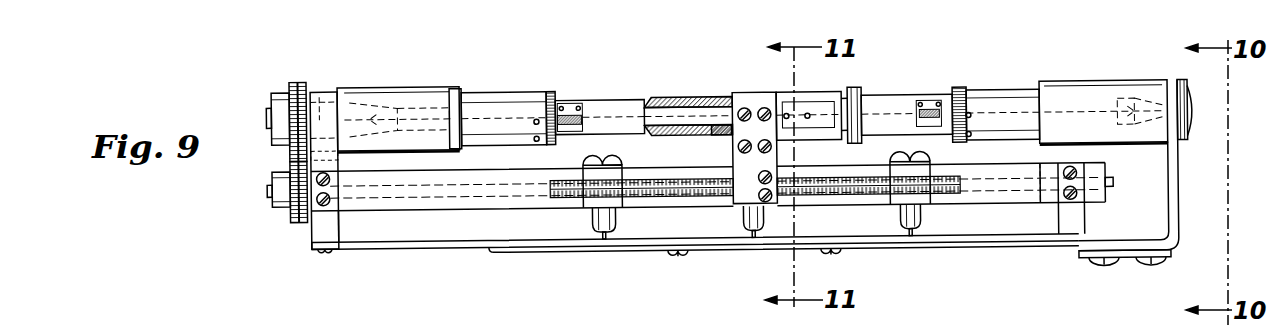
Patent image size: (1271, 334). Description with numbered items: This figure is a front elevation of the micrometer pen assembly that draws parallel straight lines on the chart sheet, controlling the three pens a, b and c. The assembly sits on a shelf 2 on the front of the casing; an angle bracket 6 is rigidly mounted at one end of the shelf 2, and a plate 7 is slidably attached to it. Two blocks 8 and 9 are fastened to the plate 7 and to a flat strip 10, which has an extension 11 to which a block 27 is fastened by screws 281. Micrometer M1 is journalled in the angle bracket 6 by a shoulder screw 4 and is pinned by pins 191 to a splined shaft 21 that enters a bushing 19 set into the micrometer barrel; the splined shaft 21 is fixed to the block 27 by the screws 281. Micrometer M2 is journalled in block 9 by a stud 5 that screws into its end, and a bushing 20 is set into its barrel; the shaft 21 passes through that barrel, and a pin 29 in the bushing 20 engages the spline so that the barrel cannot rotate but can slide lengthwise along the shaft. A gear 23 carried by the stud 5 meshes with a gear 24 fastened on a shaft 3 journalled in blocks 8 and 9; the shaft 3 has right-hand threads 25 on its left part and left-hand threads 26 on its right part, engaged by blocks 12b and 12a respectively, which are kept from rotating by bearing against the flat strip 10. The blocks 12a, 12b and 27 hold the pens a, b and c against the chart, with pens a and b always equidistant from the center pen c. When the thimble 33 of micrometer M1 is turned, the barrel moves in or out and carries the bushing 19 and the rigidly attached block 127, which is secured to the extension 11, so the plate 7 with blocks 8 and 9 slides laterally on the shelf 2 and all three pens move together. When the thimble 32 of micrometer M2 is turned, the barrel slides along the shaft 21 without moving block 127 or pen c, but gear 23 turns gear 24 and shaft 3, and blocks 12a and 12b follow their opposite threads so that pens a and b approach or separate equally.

The shelf 2 is at (1017, 250).
The shaft 3 is at (380, 188).
The shoulder screw 4 is at (1190, 119).
The stud 5 is at (321, 93).
The angle bracket 6 is at (1175, 229).
The plate 7 is at (388, 242).
The block 8 is at (1076, 228).
The block 9 is at (317, 151).
The flat strip 10 is at (463, 204).
The extension 11 is at (763, 95).
The block 12a is at (933, 172).
The block 12b is at (583, 176).
The bushing 19 is at (828, 94).
The bushing 20 is at (717, 99).
The splined shaft 21 is at (677, 110).
The gear 23 is at (297, 78).
The gear 24 is at (298, 218).
The right-hand threads 25 is at (682, 191).
The left-hand threads 26 is at (853, 192).
The block 27 is at (772, 202).
The pin 29 is at (726, 134).
The thimble 32 is at (433, 89).
The thimble 33 is at (1067, 91).
The block 127 is at (740, 152).
The pins 191 is at (809, 114).
The screws 281 is at (771, 146).
The micrometer M1 is at (1078, 96).
The micrometer M2 is at (385, 92).
The pen a is at (909, 240).
The pen b is at (601, 233).
The pen c is at (751, 238).